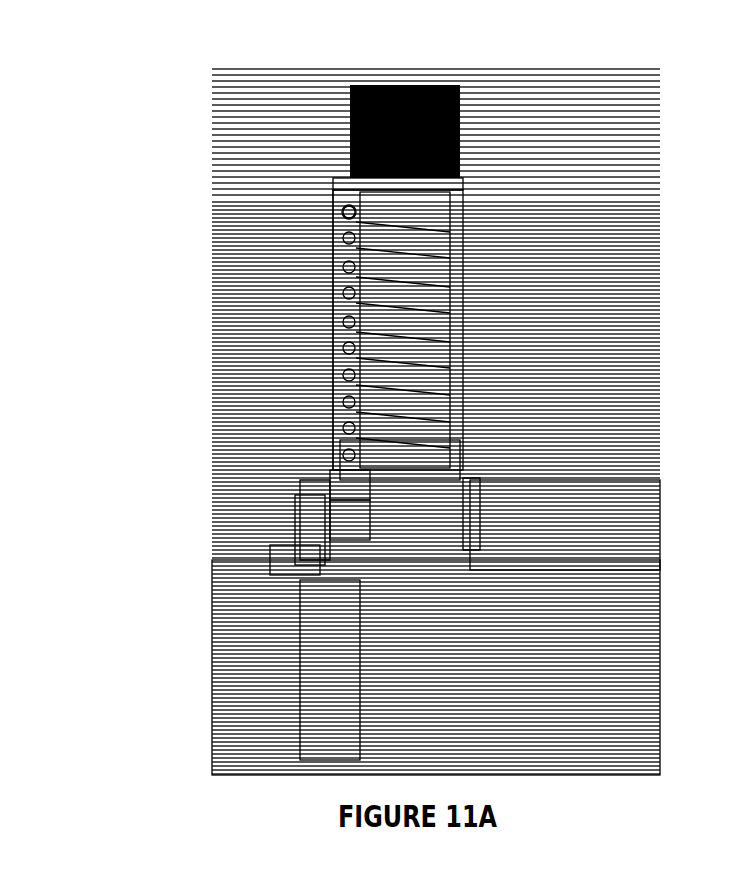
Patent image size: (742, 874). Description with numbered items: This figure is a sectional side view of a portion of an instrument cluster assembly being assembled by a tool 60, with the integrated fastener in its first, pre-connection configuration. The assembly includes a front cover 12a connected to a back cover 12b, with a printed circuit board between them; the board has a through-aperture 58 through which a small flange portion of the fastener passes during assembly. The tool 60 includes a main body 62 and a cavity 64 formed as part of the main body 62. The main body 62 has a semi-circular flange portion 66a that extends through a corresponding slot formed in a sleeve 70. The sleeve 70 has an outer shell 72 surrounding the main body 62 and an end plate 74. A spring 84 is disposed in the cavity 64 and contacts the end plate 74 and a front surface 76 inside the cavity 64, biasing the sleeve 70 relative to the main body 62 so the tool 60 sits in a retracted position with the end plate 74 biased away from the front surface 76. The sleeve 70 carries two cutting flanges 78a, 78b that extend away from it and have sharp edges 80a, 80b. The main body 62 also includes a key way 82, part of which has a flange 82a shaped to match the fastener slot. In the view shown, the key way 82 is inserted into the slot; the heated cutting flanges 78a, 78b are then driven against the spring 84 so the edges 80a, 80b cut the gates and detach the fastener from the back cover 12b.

The tool 60 is at (275, 268).
The semi-circular flange portion 66a is at (460, 100).
The end plate 74 is at (460, 155).
The cavity 64 is at (460, 210).
The sleeve 70 is at (460, 280).
The outer shell 72 is at (460, 337).
The main body 62 is at (460, 368).
The front surface 76 is at (460, 428).
The cutting flange 78a is at (470, 545).
The sharp edge 80a is at (467, 550).
The spring 84 is at (333, 313).
The key way 82 is at (340, 473).
The cutting flange 78b is at (332, 492).
The back cover 12b is at (312, 530).
The flange 82a is at (352, 520).
The sharp edge 80b is at (285, 545).
The through-aperture 58 is at (290, 540).
The front cover 12a is at (313, 663).